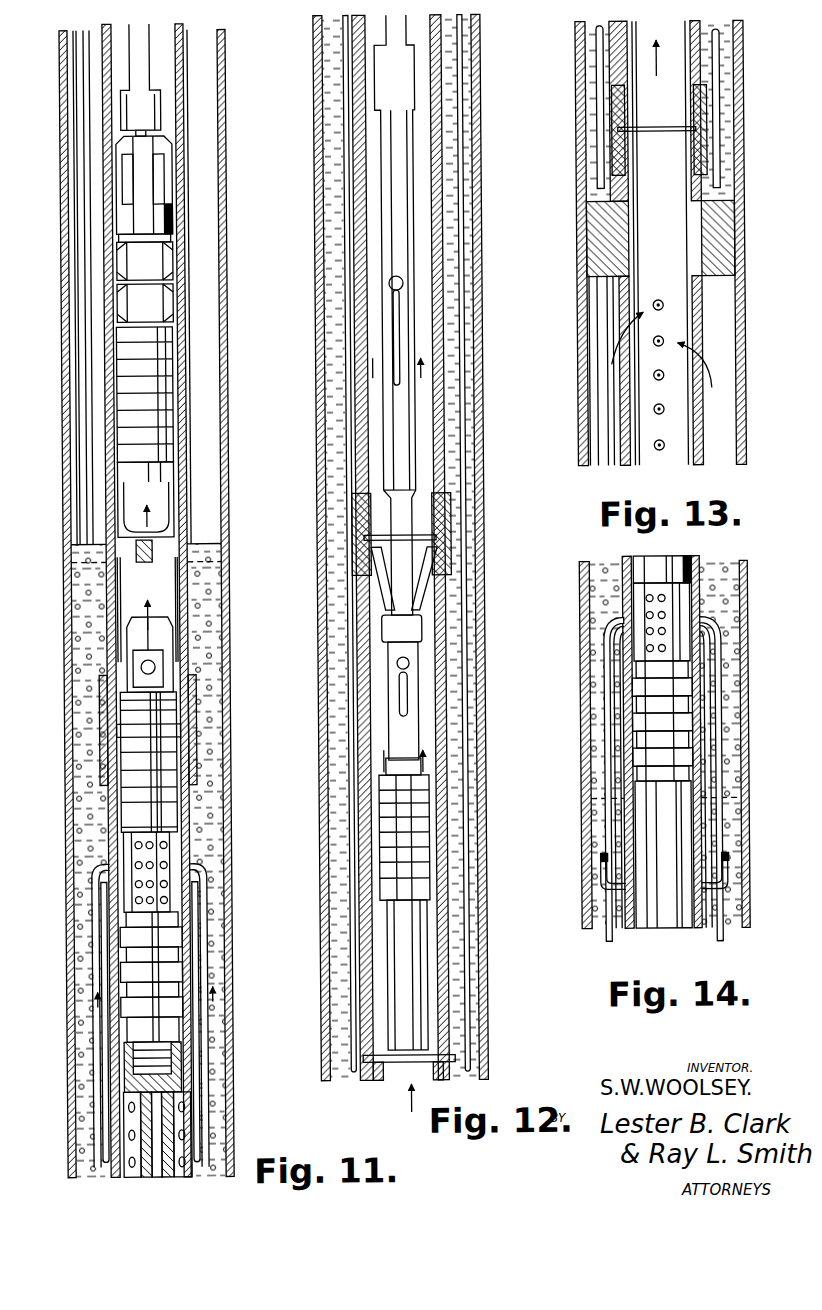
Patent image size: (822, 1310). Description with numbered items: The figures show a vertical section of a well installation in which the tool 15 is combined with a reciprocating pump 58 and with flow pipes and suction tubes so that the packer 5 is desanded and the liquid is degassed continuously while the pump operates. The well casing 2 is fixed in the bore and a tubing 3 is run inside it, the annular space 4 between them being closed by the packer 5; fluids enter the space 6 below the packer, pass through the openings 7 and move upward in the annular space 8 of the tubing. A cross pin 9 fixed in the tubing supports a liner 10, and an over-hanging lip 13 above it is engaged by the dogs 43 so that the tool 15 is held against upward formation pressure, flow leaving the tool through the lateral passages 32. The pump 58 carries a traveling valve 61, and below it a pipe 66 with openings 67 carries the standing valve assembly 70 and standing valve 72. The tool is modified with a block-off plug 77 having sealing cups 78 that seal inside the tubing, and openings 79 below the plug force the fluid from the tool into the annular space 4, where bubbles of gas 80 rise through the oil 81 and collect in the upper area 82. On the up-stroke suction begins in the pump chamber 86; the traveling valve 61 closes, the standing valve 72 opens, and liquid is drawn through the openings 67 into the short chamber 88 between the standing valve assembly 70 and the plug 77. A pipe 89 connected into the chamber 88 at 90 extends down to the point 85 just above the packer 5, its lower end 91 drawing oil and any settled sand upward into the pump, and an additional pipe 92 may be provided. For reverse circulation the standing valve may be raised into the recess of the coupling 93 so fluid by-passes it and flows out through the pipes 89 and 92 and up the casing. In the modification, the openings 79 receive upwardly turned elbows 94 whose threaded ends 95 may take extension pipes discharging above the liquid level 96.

In FIG. 12, the well casing 2 is at (488, 950).
In FIG. 13, the well casing 2 is at (750, 330).
In FIG. 14, the well casing 2 is at (749, 872).
In FIG. 12, the tubing 3 is at (468, 972).
In FIG. 14, the tubing 3 is at (692, 925).
In FIG. 11, the annular space 4 is at (210, 1130).
In FIG. 14, the annular space 4 is at (728, 932).
In FIG. 13, the packer 5 is at (748, 252).
In FIG. 13, the space in the casing below the packer 6 is at (733, 420).
In FIG. 13, the openings 7 is at (664, 414).
In FIG. 13, the annular space in the tubing 8 is at (658, 243).
In FIG. 12, the cross pin 9 is at (452, 1058).
In FIG. 12, the liner 10 is at (448, 1008).
In FIG. 12, the over-hanging lip 13 is at (443, 540).
In FIG. 12, the tool 15 is at (414, 918).
In FIG. 12, the lateral passages 32 is at (418, 770).
In FIG. 12, the dogs 43 is at (433, 582).
In FIG. 11, the reciprocating pump 58 is at (178, 372).
In FIG. 11, the traveling valve 61 is at (172, 180).
In FIG. 11, the pipe 66 is at (172, 838).
In FIG. 14, the pipe 66 is at (690, 592).
In FIG. 11, the openings 67 is at (148, 838).
In FIG. 14, the openings 67 is at (683, 615).
In FIG. 11, the standing valve assembly 70 is at (130, 760).
In FIG. 11, the standing valve 72 is at (175, 658).
In FIG. 11, the block-off plug 77 is at (178, 958).
In FIG. 14, the block-off plug 77 is at (702, 718).
In FIG. 11, the sealing cups 78 is at (182, 915).
In FIG. 11, the openings 79 is at (187, 1103).
In FIG. 11, the bubbles of gas 80 is at (210, 700).
In FIG. 14, the bubbles of gas 80 is at (724, 785).
In FIG. 11, the oil 81 is at (218, 775).
In FIG. 14, the oil 81 is at (727, 812).
In FIG. 11, the upper area 82 is at (213, 222).
In FIG. 13, the suction point 85 is at (730, 195).
In FIG. 11, the pump chamber 86 is at (168, 568).
In FIG. 11, the chamber 88 is at (175, 858).
In FIG. 11, the pipe 89 is at (97, 1012).
In FIG. 12, the pipe 89 is at (350, 240).
In FIG. 13, the pipe 89 is at (600, 105).
In FIG. 14, the pipe 89 is at (613, 692).
In FIG. 11, the connection point 90 is at (108, 868).
In FIG. 13, the lower end of pipe 91 is at (603, 182).
In FIG. 11, the additional pipe 92 is at (205, 1040).
In FIG. 12, the additional pipe 92 is at (470, 835).
In FIG. 14, the additional pipe 92 is at (714, 728).
In FIG. 11, the coupling 93 is at (192, 728).
In FIG. 14, the elbow 94 is at (737, 893).
In FIG. 14, the threaded ends 95 is at (600, 875).
In FIG. 11, the liquid level 96 is at (203, 545).